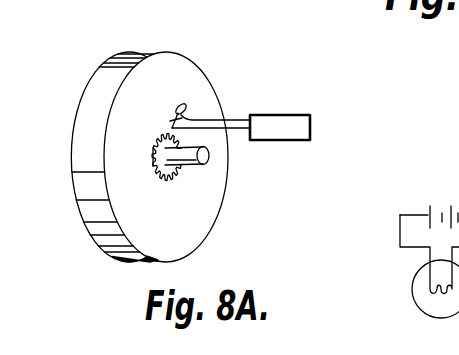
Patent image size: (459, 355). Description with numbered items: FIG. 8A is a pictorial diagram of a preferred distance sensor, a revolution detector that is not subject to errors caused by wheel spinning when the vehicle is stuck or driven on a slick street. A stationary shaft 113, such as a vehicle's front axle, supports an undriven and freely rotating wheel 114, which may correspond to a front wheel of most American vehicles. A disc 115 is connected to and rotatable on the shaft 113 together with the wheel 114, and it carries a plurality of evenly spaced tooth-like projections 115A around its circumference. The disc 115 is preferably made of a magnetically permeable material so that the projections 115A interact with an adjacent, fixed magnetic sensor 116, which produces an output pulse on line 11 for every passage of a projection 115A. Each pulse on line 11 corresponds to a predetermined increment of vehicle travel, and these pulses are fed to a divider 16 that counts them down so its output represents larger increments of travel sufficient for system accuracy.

The wheel 114 is at (124, 62).
The disc 115 is at (180, 183).
The tooth-like projections 115A is at (160, 160).
The stationary shaft 113 is at (194, 166).
The magnetic sensor 116 is at (189, 105).
The line 11 is at (272, 120).
The divider 16 is at (385, 137).